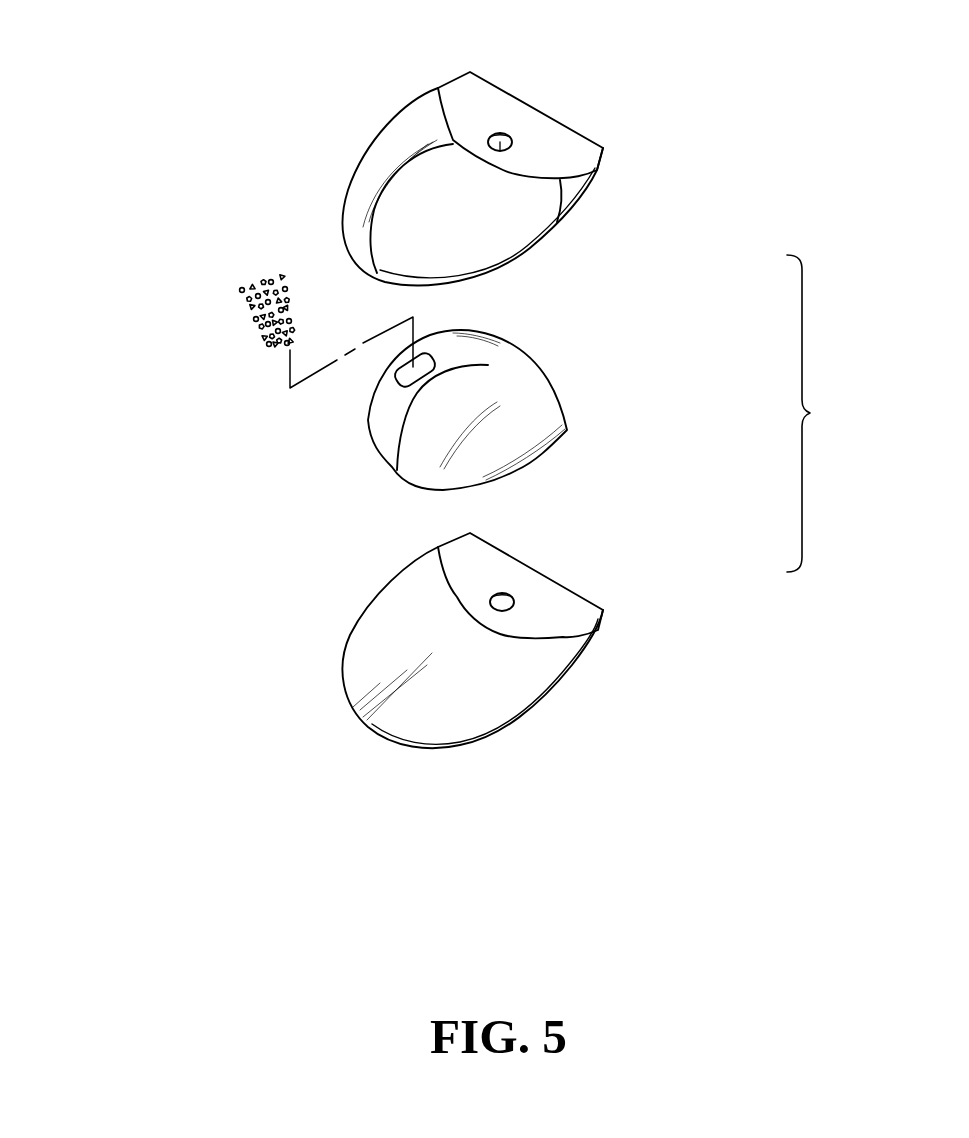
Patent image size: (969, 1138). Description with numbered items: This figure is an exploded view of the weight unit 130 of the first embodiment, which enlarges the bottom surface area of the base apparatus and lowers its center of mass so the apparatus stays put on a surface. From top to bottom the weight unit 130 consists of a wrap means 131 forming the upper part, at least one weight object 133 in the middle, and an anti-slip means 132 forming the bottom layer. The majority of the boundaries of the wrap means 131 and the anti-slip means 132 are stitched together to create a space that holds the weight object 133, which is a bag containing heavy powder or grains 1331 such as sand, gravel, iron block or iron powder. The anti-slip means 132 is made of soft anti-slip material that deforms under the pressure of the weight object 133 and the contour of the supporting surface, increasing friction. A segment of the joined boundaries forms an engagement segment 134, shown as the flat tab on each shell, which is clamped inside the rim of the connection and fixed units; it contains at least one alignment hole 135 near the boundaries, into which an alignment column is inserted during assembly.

The weight unit 130 is at (826, 413).
The wrap means 131 is at (487, 237).
The anti-slip means 132 is at (557, 683).
The weight object 133 is at (543, 409).
The heavy powder or grains 1331 is at (247, 315).
The engagement segment 134 is at (557, 142).
The alignment hole 135 is at (490, 134).